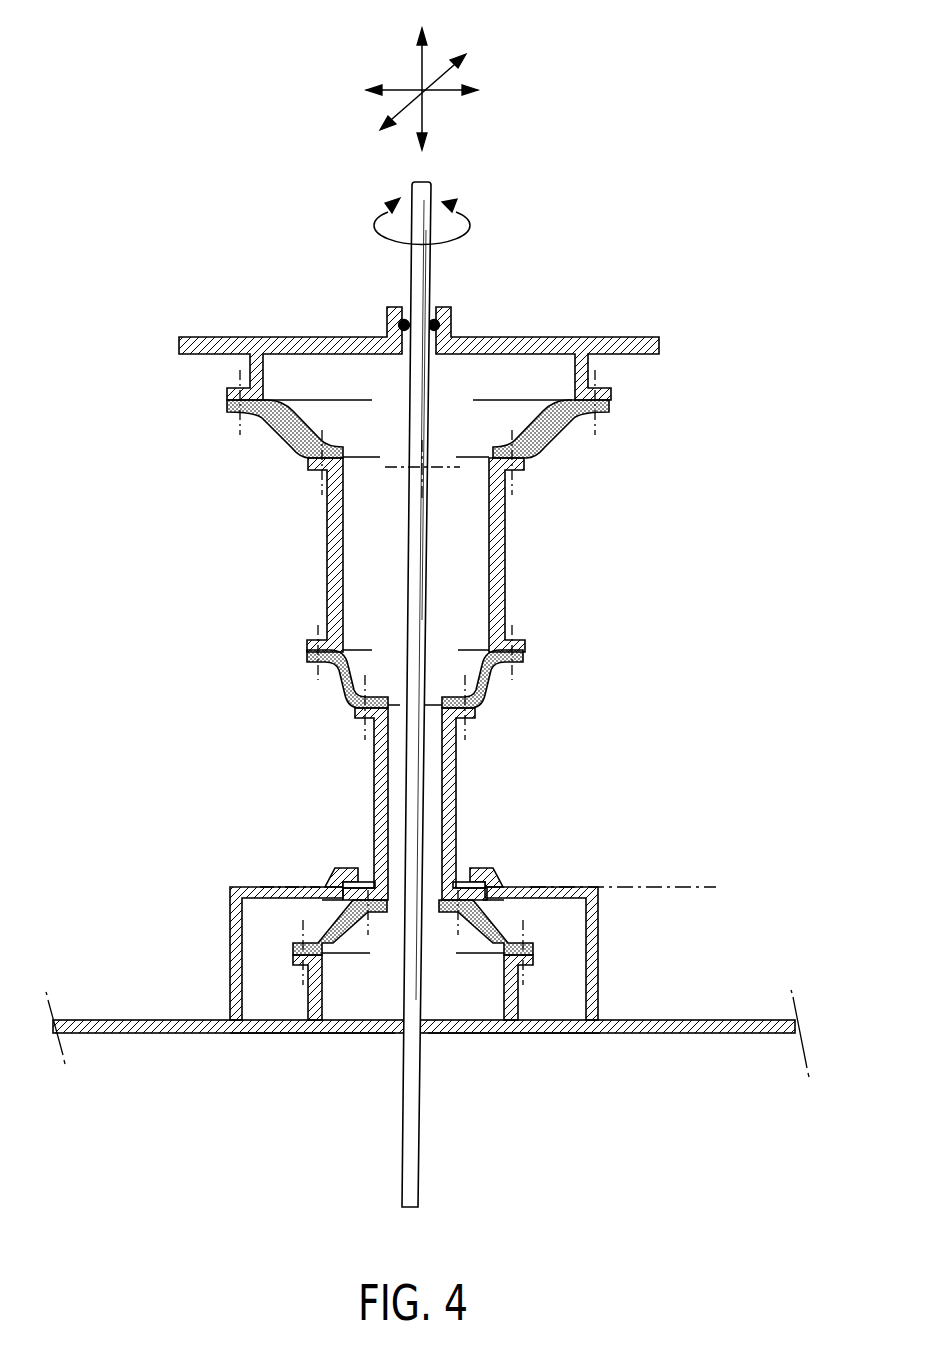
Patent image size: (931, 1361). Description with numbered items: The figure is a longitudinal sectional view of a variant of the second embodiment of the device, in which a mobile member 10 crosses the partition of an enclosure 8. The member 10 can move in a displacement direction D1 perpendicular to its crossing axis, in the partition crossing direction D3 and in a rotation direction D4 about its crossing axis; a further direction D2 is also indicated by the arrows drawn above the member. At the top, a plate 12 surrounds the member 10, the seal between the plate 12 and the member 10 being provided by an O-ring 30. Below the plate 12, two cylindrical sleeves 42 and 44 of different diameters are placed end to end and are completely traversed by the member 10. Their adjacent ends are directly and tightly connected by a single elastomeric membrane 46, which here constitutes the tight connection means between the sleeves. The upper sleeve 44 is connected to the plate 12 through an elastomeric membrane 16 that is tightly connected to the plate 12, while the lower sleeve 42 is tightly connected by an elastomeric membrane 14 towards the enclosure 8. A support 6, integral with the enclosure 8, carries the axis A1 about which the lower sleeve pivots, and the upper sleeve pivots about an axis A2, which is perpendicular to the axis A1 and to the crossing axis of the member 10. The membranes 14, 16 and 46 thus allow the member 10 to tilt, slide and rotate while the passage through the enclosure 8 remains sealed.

The support 6 is at (553, 892).
The enclosure 8 is at (143, 1030).
The mobile member 10 is at (410, 1088).
The plate 12 is at (232, 344).
The elastomeric membrane 14 is at (328, 922).
The elastomeric membrane 16 is at (285, 432).
The O-ring 30 is at (400, 325).
The cylindrical sleeve 42 is at (453, 785).
The cylindrical sleeve 44 is at (498, 545).
The elastomeric membrane 46 is at (340, 685).
The rotation axis A1 is at (690, 887).
The rotation axis A2 is at (410, 470).
The displacement direction D1 is at (462, 60).
The second direction D2 is at (390, 92).
The partition crossing direction D3 is at (420, 62).
The rotation direction D4 is at (468, 226).